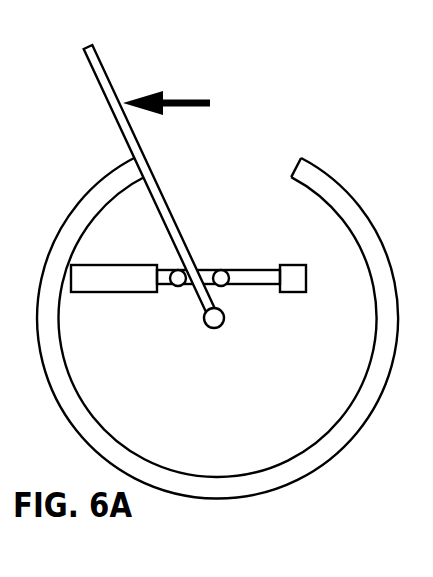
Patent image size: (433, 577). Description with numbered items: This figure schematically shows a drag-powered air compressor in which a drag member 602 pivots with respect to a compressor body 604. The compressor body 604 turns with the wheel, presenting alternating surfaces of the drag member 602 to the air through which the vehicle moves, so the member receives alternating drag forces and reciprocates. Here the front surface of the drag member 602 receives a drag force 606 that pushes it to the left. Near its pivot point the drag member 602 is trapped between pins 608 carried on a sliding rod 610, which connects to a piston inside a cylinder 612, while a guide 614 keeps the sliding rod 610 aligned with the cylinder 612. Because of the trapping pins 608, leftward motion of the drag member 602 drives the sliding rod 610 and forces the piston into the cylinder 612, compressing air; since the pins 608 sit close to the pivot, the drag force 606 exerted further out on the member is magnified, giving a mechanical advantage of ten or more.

The drag member 602 is at (104, 63).
The compressor body 604 is at (338, 180).
The drag force 606 is at (170, 92).
The pins 608 is at (217, 268).
The sliding rod 610 is at (258, 284).
The cylinder 612 is at (140, 263).
The guide 614 is at (293, 263).